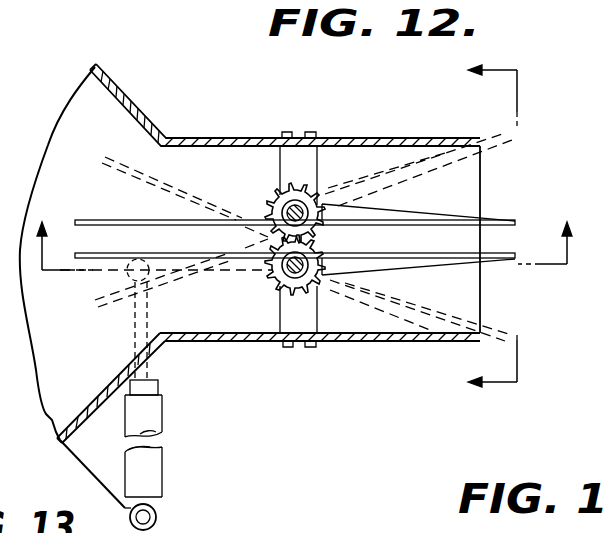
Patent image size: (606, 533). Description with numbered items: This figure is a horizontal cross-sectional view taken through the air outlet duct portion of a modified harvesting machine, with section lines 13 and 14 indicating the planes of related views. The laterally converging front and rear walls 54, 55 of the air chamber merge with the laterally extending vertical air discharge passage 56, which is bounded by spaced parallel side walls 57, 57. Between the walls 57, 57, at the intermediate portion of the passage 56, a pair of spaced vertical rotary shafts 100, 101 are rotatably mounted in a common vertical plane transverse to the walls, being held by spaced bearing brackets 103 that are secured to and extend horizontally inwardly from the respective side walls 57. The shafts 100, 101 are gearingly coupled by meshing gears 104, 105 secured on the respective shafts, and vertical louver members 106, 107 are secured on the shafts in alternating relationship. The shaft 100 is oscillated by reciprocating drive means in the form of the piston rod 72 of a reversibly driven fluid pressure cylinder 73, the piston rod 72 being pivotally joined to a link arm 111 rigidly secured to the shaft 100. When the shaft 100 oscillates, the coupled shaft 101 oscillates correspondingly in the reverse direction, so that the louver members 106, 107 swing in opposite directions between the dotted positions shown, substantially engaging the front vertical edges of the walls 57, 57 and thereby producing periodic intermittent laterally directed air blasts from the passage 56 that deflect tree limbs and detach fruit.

The section line 13- 13 is at (316, 263).
The section line 14- 14 is at (510, 230).
The front wall 54 is at (132, 106).
The rear wall 55 is at (72, 434).
The air discharge passage 56 is at (482, 344).
The side walls 57 is at (353, 148).
The piston rod 72 is at (152, 384).
The fluid pressure cylinder 73 is at (156, 482).
The vertical rotary shaft 100 is at (312, 300).
The vertical rotary shaft 101 is at (318, 196).
The bearing brackets 103 is at (323, 145).
The gear 104 is at (276, 290).
The gear 105 is at (274, 198).
The vertical louver member 106 is at (494, 262).
The vertical louver member 107 is at (497, 221).
The link arm 111 is at (213, 282).